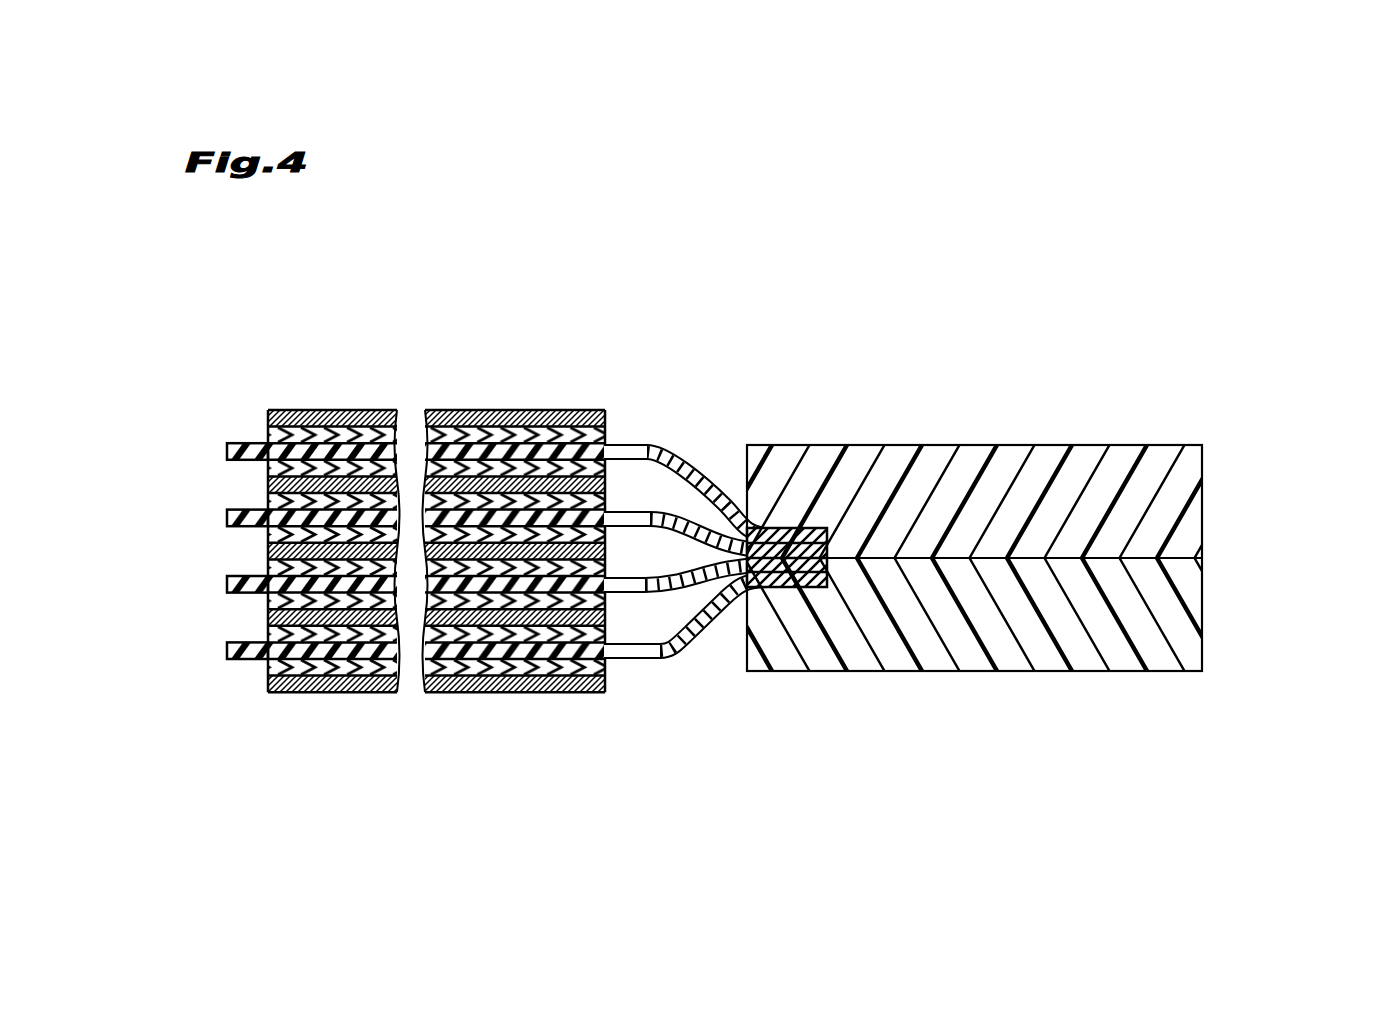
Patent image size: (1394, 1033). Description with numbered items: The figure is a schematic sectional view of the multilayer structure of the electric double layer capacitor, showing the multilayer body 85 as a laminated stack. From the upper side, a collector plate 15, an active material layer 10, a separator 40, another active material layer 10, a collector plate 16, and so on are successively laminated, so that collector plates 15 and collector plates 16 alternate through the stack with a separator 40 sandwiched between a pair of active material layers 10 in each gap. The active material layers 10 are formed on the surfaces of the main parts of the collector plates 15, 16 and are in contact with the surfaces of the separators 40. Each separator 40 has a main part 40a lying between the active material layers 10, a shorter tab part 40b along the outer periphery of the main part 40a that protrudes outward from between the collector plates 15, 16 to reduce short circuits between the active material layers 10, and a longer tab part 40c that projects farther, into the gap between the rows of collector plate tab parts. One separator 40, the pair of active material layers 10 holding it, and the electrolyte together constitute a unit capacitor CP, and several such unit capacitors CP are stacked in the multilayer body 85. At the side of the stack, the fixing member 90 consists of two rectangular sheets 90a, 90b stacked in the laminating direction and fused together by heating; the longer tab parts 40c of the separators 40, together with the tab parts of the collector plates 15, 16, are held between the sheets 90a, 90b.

The multilayer body 85 is at (547, 310).
The active material layer 10 is at (264, 668).
The separator 40 is at (255, 659).
The main part 40a is at (528, 453).
The shorter tab part 40b is at (655, 456).
The longer tab part 40c is at (299, 412).
The unit capacitor CP is at (148, 739).
The collector plate 15 is at (268, 683).
The collector plate 16 is at (268, 619).
The fixing member 90 is at (1326, 493).
The rectangular sheet 90a is at (1203, 509).
The rectangular sheet 90b is at (1203, 594).